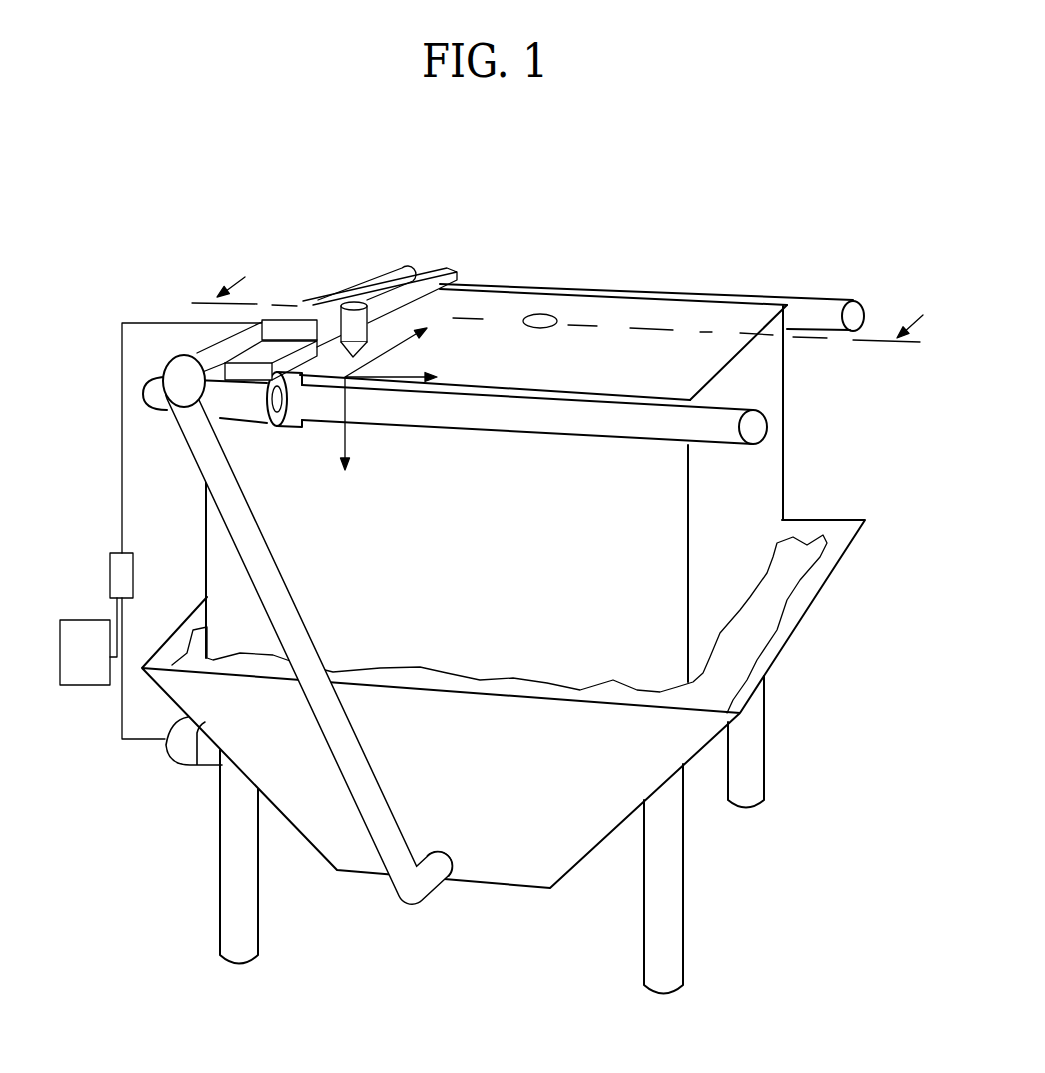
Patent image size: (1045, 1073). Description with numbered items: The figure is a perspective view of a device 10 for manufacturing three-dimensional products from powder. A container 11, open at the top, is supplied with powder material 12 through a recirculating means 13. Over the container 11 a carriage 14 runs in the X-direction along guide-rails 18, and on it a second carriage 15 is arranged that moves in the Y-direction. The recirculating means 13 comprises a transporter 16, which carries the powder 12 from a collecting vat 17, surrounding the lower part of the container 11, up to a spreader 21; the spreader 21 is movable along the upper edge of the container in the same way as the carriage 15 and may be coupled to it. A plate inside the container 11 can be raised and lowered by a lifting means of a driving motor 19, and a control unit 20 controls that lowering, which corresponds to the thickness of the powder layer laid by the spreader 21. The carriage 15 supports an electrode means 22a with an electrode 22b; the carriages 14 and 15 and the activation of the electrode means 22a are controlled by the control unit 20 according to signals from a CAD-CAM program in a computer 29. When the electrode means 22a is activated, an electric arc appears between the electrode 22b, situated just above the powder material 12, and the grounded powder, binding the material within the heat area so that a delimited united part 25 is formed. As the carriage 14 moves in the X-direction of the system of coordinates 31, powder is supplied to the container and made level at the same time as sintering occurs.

The device 10 is at (226, 170).
The container 11 is at (760, 492).
The powder material 12 is at (645, 308).
The recirculating means 13 is at (374, 840).
The carriage 14 is at (432, 272).
The carriage 15 is at (318, 303).
The transporter 16 is at (432, 888).
The collecting vat 17 is at (518, 853).
The guide-rails 18 is at (818, 305).
The driving motor 19 is at (182, 747).
The control unit 20 is at (114, 552).
The spreader 21 is at (398, 266).
The electrode means 22a is at (353, 303).
The electrode 22b is at (352, 355).
The delimited united part 25 is at (543, 316).
The computer 29 is at (80, 620).
The system of coordinates 31 is at (397, 377).